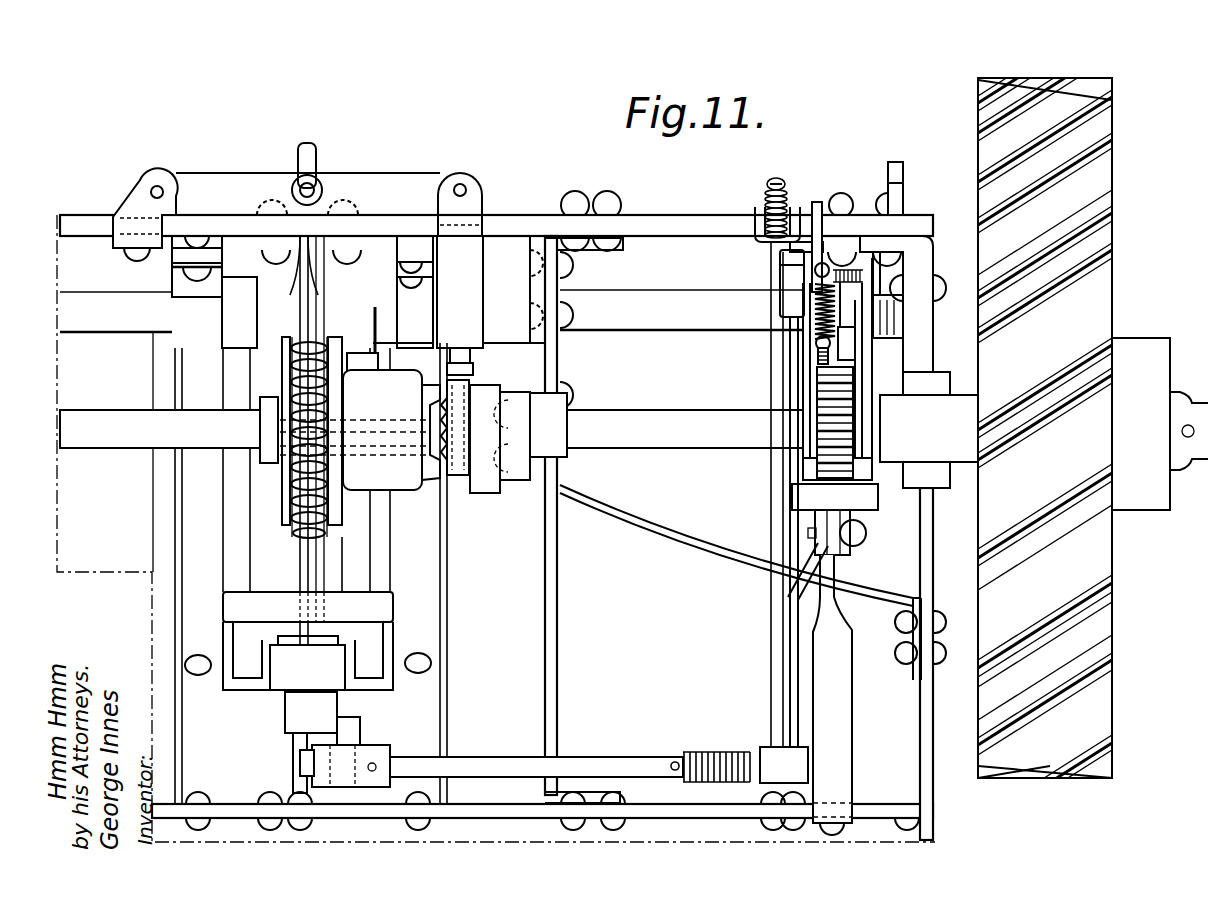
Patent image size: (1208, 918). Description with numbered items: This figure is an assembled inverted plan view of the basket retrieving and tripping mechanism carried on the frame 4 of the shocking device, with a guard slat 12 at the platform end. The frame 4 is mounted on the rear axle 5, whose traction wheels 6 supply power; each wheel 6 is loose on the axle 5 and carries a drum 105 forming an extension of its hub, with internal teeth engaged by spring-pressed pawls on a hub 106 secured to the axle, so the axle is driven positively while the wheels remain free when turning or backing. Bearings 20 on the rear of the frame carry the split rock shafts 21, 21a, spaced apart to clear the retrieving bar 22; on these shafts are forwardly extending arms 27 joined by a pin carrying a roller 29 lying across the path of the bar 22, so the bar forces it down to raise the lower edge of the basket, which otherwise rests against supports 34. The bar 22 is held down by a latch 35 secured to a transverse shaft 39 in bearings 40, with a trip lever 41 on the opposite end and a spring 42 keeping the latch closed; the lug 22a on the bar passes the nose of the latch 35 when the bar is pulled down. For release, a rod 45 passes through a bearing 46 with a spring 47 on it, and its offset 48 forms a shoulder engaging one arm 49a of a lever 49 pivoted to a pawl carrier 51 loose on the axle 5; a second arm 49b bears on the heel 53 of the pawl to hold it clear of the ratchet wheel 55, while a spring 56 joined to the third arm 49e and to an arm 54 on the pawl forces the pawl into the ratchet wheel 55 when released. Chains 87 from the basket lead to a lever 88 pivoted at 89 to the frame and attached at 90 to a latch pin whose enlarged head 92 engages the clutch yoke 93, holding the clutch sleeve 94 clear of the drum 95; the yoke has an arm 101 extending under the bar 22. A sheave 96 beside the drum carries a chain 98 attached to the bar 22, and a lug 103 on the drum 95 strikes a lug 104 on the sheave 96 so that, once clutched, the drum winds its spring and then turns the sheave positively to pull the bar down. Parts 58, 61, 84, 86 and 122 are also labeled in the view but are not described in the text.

The frame 4 is at (500, 812).
The rear axle 5 is at (668, 440).
The traction wheels 6 is at (1090, 630).
The guard slats 12 is at (1180, 430).
The bearings 20 is at (915, 318).
The rock shaft 21 is at (122, 318).
The rock shaft 21a is at (636, 318).
The retrieving bar 22 is at (325, 710).
The lug 22a is at (365, 748).
The forwardly extending arms 27 is at (390, 690).
The roller 29 is at (295, 675).
The supports 34 is at (440, 600).
The latch 35 is at (365, 732).
The transverse shaft 39 is at (600, 760).
The bearings 40 is at (812, 760).
The trip lever 41 is at (775, 750).
The spring 42 is at (712, 752).
The rod 45 is at (783, 183).
The bearing 46 is at (762, 240).
The spring 47 is at (762, 207).
The offset 48 is at (815, 210).
The lever 49 is at (780, 308).
The arm of lever 49a is at (780, 262).
The second arm of lever 49b is at (840, 268).
The third arm of lever 49e is at (816, 360).
The pawl carrier 51 is at (860, 364).
The heel 53 is at (855, 346).
The arm on pawl 54 is at (840, 282).
The ratchet wheel 55 is at (817, 432).
The spring 56 is at (815, 338).
The pin 58 is at (900, 170).
The rod 61 is at (790, 598).
The housing 84 is at (800, 490).
The lever 86 is at (840, 705).
The chains 87 is at (315, 152).
The lever 88 is at (398, 178).
The pivot 89 is at (157, 190).
The attachment point 90 is at (460, 188).
The enlarged head 92 is at (452, 358).
The clutch yoke 93 is at (493, 378).
The clutch sleeve 94 is at (510, 485).
The drum 95 is at (406, 488).
The sheave 96 is at (290, 525).
The chain 98 is at (303, 335).
The arm of clutch yoke 101 is at (372, 438).
The lug 103 is at (368, 340).
The lug 104 is at (378, 398).
The drums 105 is at (1138, 510).
The hubs 106 is at (1172, 468).
The plate 122 is at (322, 580).